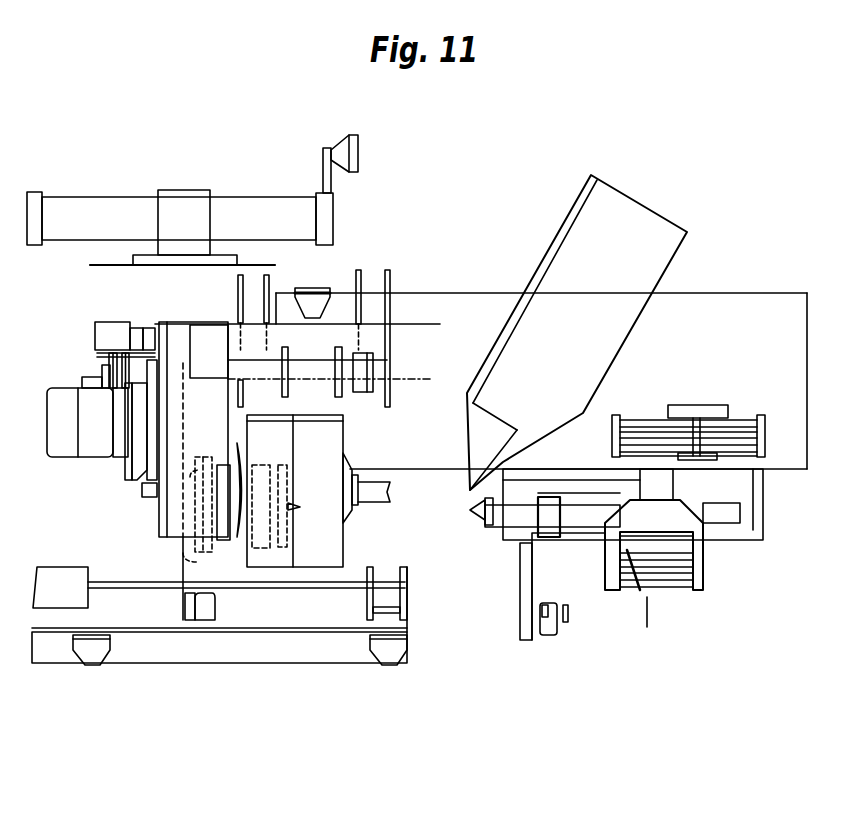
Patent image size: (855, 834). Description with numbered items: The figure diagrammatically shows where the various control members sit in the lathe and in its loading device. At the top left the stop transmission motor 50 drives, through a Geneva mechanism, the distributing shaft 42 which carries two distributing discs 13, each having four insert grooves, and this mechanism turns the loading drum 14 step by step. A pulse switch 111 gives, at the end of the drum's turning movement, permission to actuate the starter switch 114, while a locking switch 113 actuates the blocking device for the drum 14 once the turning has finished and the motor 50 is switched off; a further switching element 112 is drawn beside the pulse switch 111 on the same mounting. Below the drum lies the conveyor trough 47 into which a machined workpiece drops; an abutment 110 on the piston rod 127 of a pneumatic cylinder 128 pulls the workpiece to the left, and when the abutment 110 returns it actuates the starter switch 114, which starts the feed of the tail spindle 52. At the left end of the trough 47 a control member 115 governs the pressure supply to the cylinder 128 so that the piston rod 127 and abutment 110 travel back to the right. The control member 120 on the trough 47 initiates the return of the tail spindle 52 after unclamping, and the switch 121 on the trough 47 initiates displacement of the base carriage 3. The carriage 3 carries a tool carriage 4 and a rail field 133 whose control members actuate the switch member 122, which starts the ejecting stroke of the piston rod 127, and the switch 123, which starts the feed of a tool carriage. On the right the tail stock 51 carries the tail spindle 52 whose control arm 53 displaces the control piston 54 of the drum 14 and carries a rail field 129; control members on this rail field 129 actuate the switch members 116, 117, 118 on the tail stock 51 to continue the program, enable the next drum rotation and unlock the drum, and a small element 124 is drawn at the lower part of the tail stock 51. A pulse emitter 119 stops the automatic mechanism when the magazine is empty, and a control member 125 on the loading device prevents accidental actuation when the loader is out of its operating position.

The base carriage 3 is at (708, 296).
The tool carriage 4 is at (582, 232).
The distributing disc 13 is at (333, 348).
The loading drum 14 is at (330, 517).
The distributing shaft 42 is at (310, 370).
The conveyor trough 47 is at (322, 650).
The stop transmission motor 50 is at (97, 438).
The tail stock 51 is at (520, 535).
The tail spindle 52 is at (482, 517).
The control arm 53 is at (730, 522).
The control piston 54 is at (377, 497).
The abutment 110 is at (377, 585).
The pulse switch 111 is at (130, 350).
The screw 112 is at (110, 350).
The locking switch 113 is at (100, 355).
The starter switch 114 is at (390, 667).
The control member 115 is at (93, 665).
The switch member 116 is at (627, 587).
The switch member 117 is at (637, 570).
The switch member 118 is at (633, 567).
The pulse emitter 119 is at (313, 320).
The control member 120 is at (191, 605).
The switch 121 is at (217, 613).
The switch member 122 is at (720, 392).
The switch 123 is at (722, 417).
The sensor 124 is at (548, 630).
The control member 125 is at (333, 160).
The piston rod 127 is at (147, 582).
The pneumatic cylinder 128 is at (63, 578).
The rail field 129 is at (697, 573).
The rail field 133 is at (778, 416).